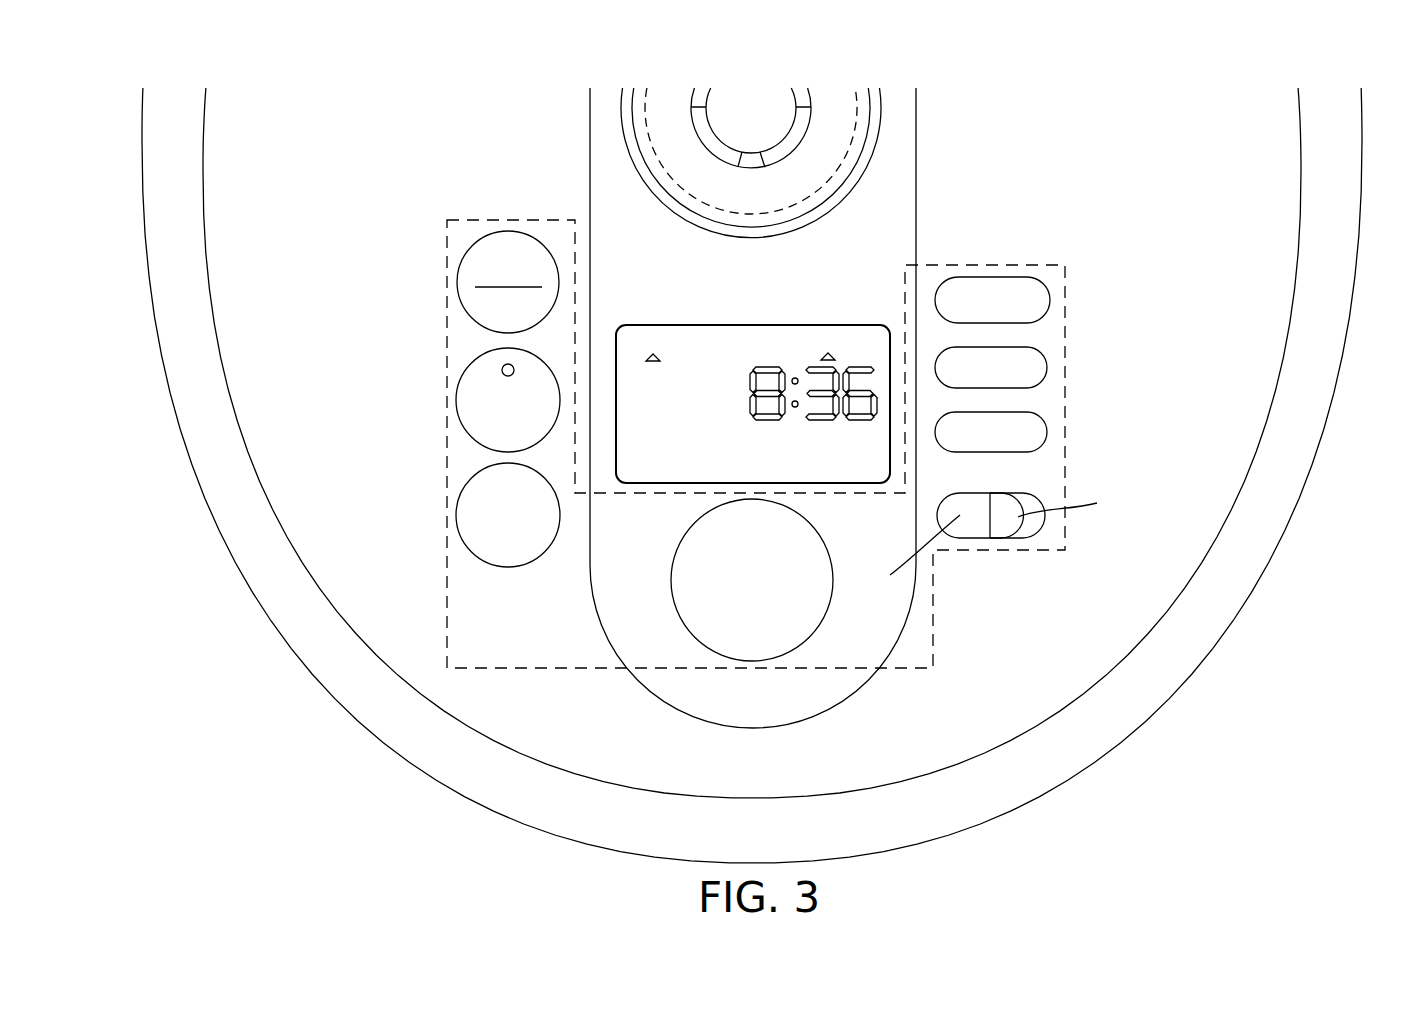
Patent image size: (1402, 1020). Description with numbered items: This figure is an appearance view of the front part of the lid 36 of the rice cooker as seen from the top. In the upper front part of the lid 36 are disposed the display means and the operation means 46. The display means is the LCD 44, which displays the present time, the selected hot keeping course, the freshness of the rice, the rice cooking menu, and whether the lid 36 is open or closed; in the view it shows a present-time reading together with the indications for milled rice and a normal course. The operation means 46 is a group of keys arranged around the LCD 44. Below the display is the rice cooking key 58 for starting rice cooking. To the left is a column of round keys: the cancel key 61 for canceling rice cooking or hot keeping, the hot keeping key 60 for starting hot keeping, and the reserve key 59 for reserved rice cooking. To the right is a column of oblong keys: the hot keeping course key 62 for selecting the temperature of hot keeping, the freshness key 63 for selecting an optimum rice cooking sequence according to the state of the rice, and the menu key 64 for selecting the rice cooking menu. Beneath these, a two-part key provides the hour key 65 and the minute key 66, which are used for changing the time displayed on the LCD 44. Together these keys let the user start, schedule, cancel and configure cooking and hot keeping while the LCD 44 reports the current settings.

The lid 36 is at (1080, 665).
The LCD 44 is at (858, 467).
The operation means 46 is at (447, 602).
The rice cooking key 58 is at (764, 651).
The reserve key 59 is at (462, 492).
The hot keeping key 60 is at (462, 380).
The cancel key 61 is at (497, 230).
The hot keeping course key 62 is at (1048, 292).
The freshness key 63 is at (1045, 360).
The menu key 64 is at (1045, 423).
The hour key 65 is at (967, 540).
The minute key 66 is at (1027, 540).